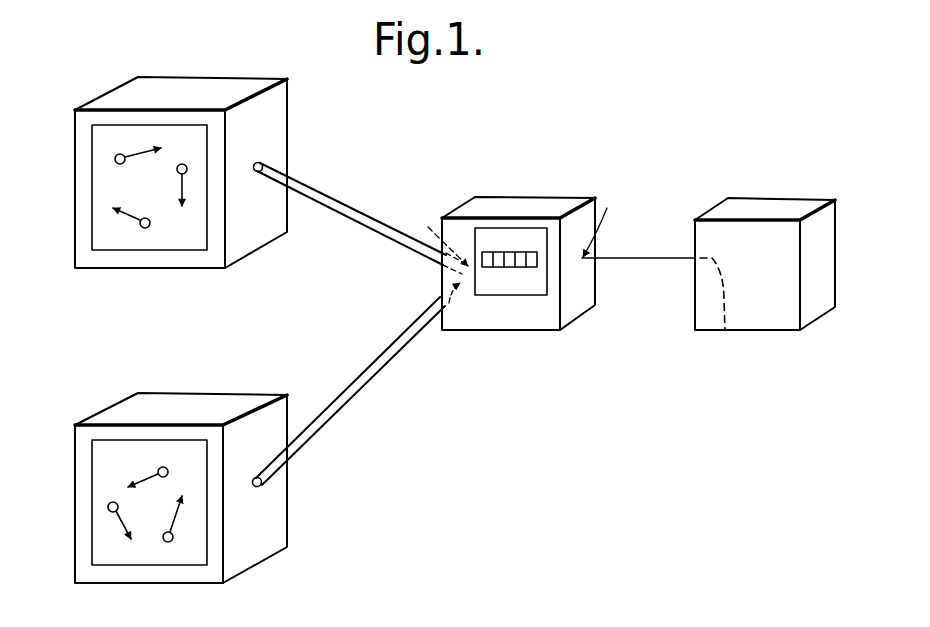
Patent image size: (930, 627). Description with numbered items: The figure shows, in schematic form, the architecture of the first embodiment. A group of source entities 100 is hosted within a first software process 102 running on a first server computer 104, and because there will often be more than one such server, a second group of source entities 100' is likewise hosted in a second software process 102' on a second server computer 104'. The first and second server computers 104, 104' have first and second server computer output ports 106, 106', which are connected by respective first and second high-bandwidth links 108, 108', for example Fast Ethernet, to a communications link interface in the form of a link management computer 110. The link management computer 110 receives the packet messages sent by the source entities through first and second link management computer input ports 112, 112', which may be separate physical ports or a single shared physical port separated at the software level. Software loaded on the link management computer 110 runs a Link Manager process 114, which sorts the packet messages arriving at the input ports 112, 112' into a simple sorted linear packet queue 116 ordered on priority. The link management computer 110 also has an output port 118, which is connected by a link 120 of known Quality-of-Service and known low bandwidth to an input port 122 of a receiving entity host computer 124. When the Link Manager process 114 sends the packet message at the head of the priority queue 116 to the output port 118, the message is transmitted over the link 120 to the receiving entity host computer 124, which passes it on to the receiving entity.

The group of source entities 100 is at (106, 188).
The first software process 102 is at (149, 215).
The first server computer 104 is at (181, 157).
The first server computer output port 106 is at (295, 155).
The first high-bandwidth link 108 is at (351, 214).
The second group of source entities 100' is at (102, 503).
The second software process 102' is at (149, 529).
The second server computer 104' is at (181, 472).
The second server computer output port 106' is at (295, 499).
The second high-bandwidth link 108' is at (350, 391).
The link management computer 110 is at (530, 182).
The first link management computer input port 112 is at (434, 238).
The second link management computer input port 112' is at (469, 324).
The Link Manager process 114 is at (535, 228).
The sorted linear packet queue 116 is at (522, 267).
The link management computer output port 118 is at (617, 228).
The link 120 is at (635, 257).
The input port of receiving entity host computer 122 is at (725, 330).
The receiving entity host computer 124 is at (783, 203).